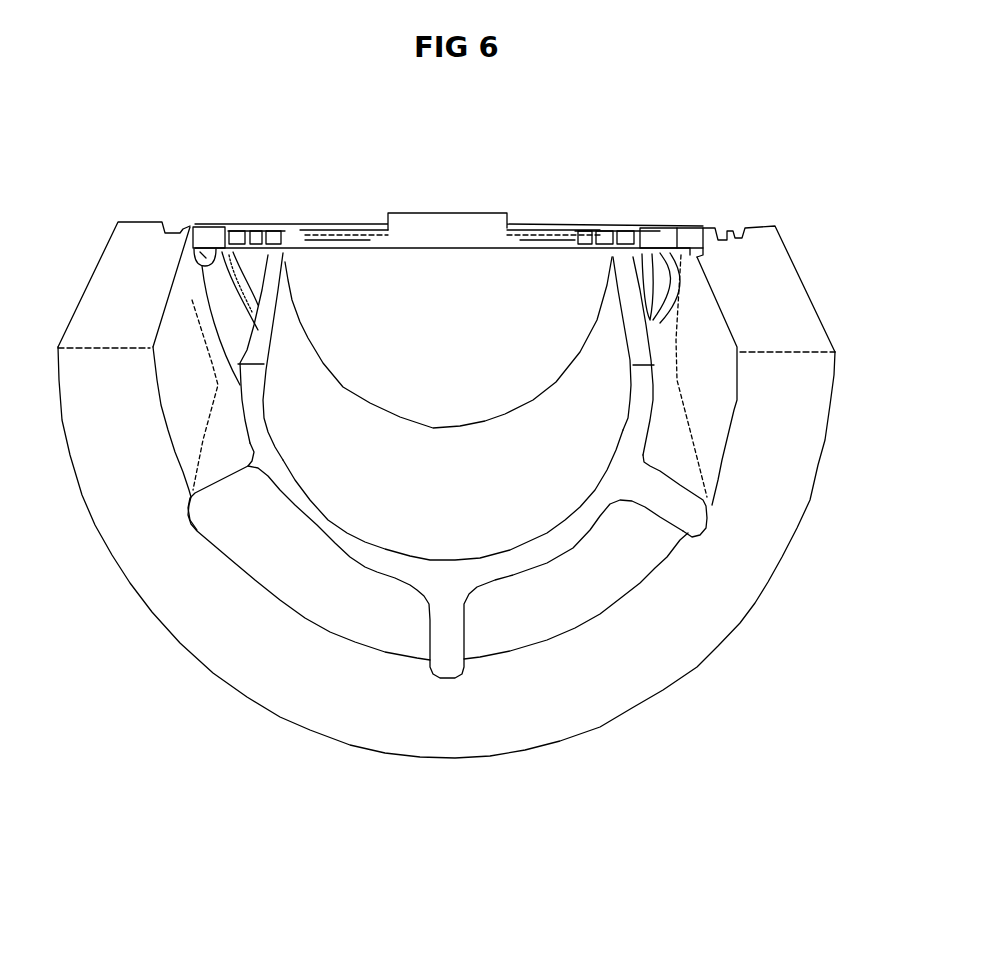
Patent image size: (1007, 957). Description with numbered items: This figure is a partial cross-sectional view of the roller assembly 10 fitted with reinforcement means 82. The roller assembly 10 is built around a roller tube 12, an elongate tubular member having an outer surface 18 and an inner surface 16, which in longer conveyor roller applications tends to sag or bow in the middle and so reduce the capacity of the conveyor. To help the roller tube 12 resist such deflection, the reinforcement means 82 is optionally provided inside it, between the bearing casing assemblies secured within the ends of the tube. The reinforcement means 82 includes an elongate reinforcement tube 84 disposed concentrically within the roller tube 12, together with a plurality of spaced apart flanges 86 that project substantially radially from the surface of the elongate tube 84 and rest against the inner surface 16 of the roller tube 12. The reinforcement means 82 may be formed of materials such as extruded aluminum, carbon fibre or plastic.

The roller assembly 10 is at (766, 91).
The roller tube 12 is at (673, 662).
The inner surface 16 is at (722, 419).
The outer surface 18 is at (600, 723).
The reinforcement means 82 is at (390, 563).
The elongate reinforcement tube 84 is at (253, 403).
The flanges 86 is at (677, 507).